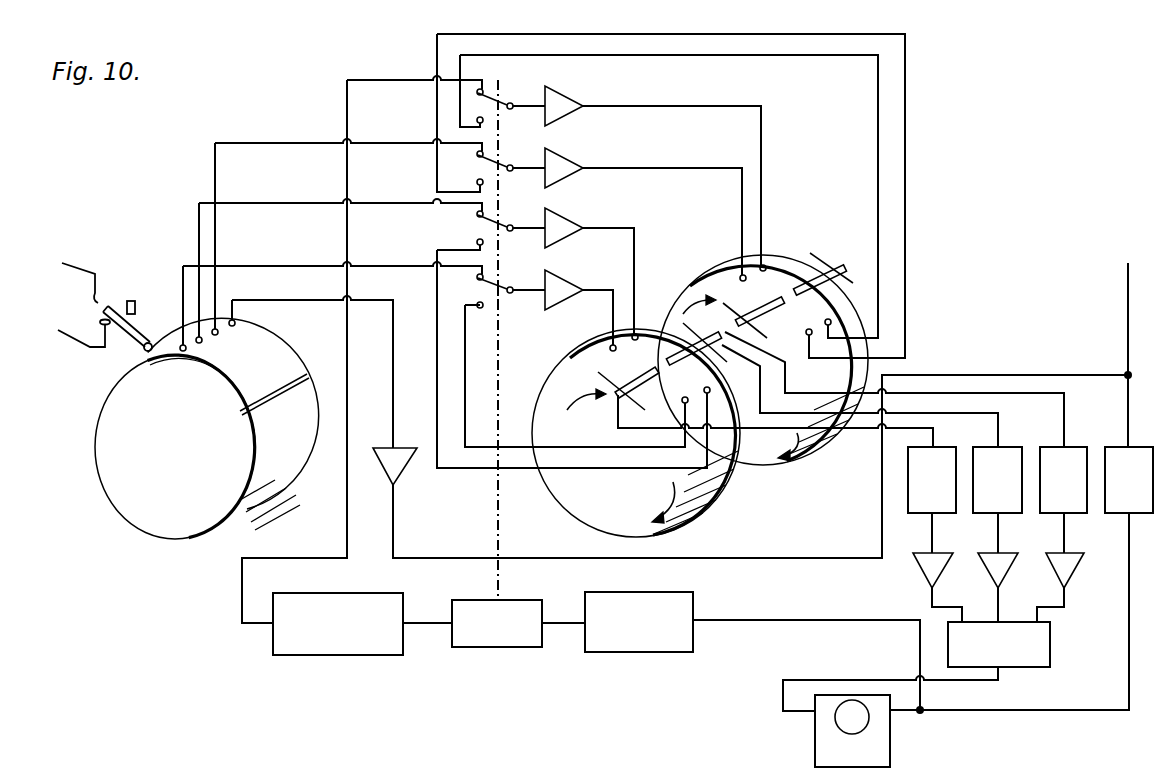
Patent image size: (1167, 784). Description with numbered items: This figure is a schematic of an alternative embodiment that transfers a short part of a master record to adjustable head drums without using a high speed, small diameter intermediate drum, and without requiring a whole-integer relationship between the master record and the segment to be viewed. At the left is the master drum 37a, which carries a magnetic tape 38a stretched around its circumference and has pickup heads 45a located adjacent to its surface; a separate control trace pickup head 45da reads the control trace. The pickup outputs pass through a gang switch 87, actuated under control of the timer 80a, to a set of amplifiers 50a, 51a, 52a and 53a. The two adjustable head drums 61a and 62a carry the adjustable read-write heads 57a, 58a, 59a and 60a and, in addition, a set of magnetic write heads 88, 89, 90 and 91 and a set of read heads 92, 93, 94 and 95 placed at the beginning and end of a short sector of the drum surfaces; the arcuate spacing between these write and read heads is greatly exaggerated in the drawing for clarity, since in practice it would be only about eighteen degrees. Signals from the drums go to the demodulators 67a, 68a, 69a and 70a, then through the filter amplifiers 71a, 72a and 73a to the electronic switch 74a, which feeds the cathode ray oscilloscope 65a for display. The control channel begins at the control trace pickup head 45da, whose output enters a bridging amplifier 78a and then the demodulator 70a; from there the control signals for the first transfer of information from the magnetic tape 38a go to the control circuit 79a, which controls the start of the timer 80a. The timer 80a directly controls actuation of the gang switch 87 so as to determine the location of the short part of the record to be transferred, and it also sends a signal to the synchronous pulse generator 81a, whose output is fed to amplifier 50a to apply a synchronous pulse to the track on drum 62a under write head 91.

The master drum 37a is at (197, 520).
The magnetic tape 38a is at (280, 360).
The pickup heads 45a is at (222, 333).
The control trace pickup head 45da is at (245, 325).
The amplifier 50a is at (562, 114).
The amplifier 51a is at (562, 176).
The amplifier 52a is at (562, 236).
The amplifier 53a is at (562, 298).
The adjustable read-write head 57a is at (657, 372).
The adjustable read-write head 58a is at (670, 358).
The adjustable read-write head 59a is at (762, 300).
The adjustable read-write head 60a is at (805, 290).
The adjustable head drum 61a is at (587, 490).
The adjustable head drum 62a is at (775, 472).
The cathode ray oscilloscope 65a is at (878, 742).
The demodulator 67a is at (922, 498).
The demodulator 68a is at (988, 498).
The demodulator 69a is at (1054, 498).
The demodulator 70a is at (1119, 498).
The filter amplifier 71a is at (920, 568).
The filter amplifier 72a is at (1003, 568).
The filter amplifier 73a is at (1070, 568).
The electronic switch 74a is at (1052, 655).
The bridging amplifier 78a is at (398, 468).
The control circuit 79a is at (647, 648).
The timer 80a is at (517, 601).
The synchronous pulse generator 81a is at (358, 657).
The gang switch 87 is at (505, 300).
The magnetic write head 88 is at (611, 344).
The magnetic write head 89 is at (638, 332).
The magnetic write head 90 is at (741, 275).
The magnetic write head 91 is at (766, 265).
The read head 92 is at (683, 403).
The read head 93 is at (709, 392).
The read head 94 is at (812, 336).
The read head 95 is at (830, 320).